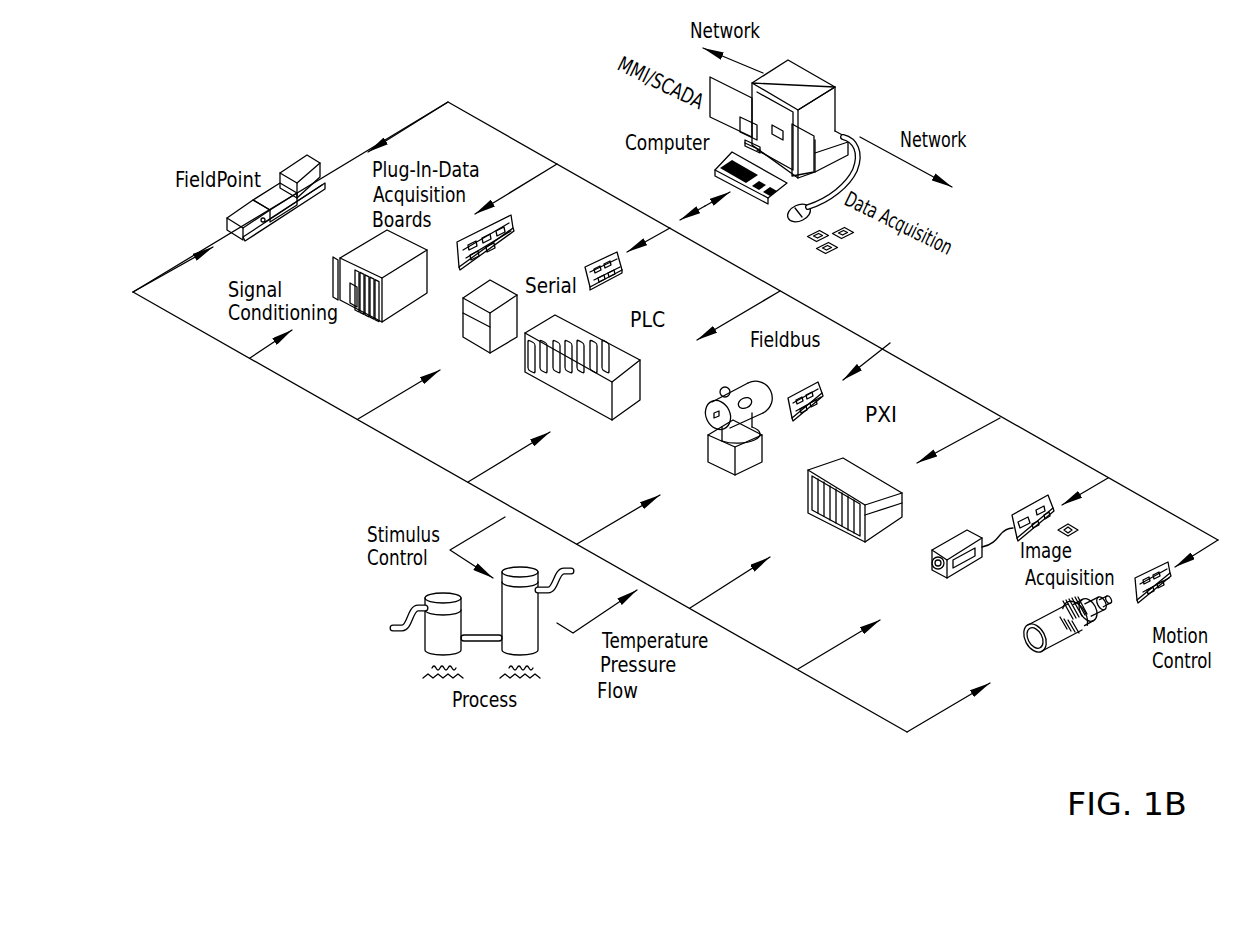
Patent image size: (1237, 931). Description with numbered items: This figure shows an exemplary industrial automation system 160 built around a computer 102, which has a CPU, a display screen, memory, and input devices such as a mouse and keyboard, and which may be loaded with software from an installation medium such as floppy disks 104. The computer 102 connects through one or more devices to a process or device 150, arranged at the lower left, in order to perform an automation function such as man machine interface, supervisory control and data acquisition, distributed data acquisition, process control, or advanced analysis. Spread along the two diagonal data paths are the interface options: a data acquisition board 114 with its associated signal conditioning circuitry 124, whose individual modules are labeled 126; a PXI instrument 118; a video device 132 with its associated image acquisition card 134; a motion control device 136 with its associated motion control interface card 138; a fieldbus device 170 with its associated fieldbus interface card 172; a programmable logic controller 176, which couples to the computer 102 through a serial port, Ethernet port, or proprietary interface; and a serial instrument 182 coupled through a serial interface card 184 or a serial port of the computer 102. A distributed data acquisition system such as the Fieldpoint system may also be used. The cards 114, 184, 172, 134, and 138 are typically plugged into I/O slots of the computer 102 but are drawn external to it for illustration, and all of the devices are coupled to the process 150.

The computer 102 is at (796, 132).
The floppy disks 104 is at (874, 269).
The data acquisition board 114 is at (510, 229).
The PXI instrument 118 is at (855, 485).
The signal conditioning circuitry 124 is at (360, 284).
The signal conditioning modules 126 is at (382, 306).
The video device 132 is at (960, 545).
The image acquisition card 134 is at (1008, 511).
The motion control device 136 is at (1070, 634).
The motion control interface card 138 is at (1177, 591).
The process or device 150 is at (444, 622).
The industrial automation system 160 is at (675, 405).
The fieldbus device 170 is at (727, 441).
The fieldbus interface card 172 is at (786, 386).
The programmable logic controller 176 is at (592, 367).
The serial instrument 182 is at (462, 323).
The serial interface card 184 is at (577, 259).